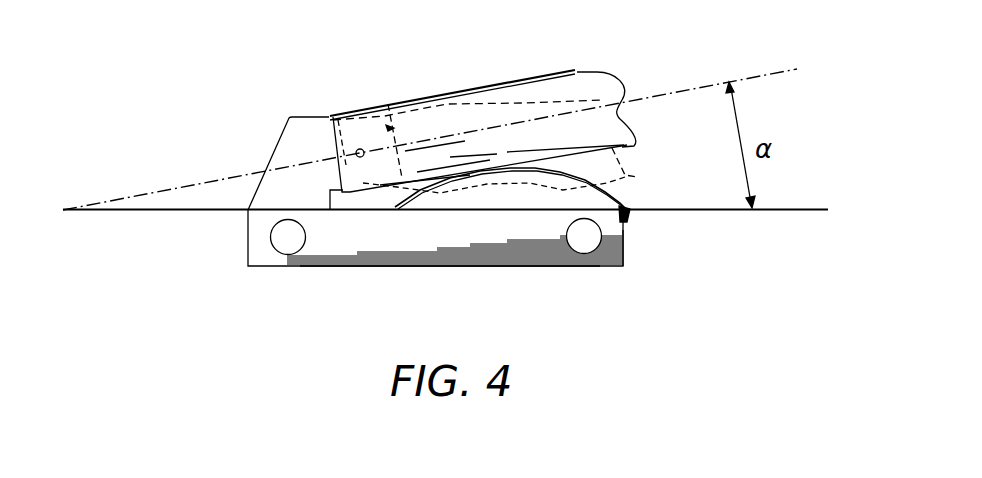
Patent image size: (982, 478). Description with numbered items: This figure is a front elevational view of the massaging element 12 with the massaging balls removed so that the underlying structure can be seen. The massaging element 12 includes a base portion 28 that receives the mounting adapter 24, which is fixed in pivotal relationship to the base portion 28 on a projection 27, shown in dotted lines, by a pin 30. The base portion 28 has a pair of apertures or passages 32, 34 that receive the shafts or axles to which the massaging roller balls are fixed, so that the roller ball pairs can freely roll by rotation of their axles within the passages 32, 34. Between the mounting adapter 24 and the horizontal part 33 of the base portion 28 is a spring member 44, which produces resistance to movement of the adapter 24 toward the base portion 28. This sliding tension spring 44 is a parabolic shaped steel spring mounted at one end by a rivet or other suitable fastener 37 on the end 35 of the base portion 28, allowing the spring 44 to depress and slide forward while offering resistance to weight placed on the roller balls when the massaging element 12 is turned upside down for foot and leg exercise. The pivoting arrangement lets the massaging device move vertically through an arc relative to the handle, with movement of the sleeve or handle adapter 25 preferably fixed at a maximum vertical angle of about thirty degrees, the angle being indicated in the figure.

The massaging element 12 is at (274, 132).
The mounting adapter 24 is at (557, 72).
The handle adapter 25 is at (474, 88).
The projection 27 is at (388, 104).
The base portion 28 is at (540, 267).
The pin 30 is at (360, 148).
The aperture or passage 32 is at (284, 254).
The horizontal part 33 is at (410, 267).
The aperture or passage 34 is at (585, 253).
The end of base portion 35 is at (625, 258).
The rivet or fastener 37 is at (629, 218).
The spring member 44 is at (608, 192).